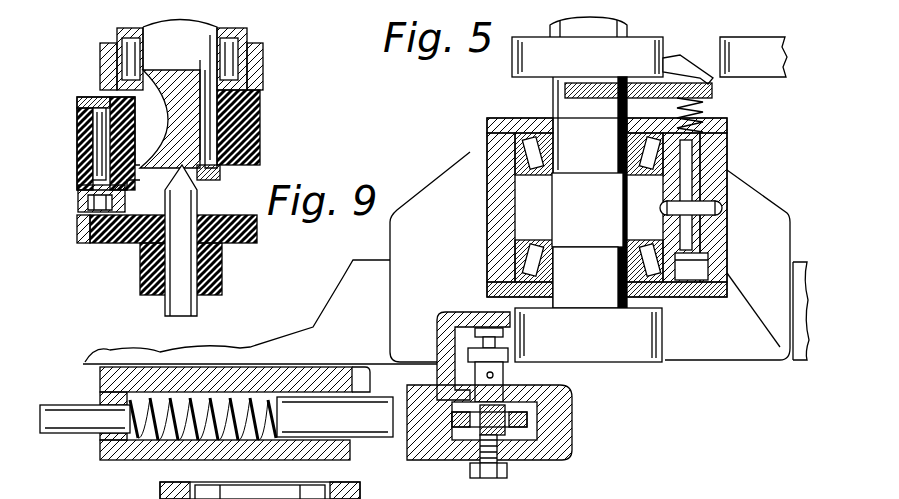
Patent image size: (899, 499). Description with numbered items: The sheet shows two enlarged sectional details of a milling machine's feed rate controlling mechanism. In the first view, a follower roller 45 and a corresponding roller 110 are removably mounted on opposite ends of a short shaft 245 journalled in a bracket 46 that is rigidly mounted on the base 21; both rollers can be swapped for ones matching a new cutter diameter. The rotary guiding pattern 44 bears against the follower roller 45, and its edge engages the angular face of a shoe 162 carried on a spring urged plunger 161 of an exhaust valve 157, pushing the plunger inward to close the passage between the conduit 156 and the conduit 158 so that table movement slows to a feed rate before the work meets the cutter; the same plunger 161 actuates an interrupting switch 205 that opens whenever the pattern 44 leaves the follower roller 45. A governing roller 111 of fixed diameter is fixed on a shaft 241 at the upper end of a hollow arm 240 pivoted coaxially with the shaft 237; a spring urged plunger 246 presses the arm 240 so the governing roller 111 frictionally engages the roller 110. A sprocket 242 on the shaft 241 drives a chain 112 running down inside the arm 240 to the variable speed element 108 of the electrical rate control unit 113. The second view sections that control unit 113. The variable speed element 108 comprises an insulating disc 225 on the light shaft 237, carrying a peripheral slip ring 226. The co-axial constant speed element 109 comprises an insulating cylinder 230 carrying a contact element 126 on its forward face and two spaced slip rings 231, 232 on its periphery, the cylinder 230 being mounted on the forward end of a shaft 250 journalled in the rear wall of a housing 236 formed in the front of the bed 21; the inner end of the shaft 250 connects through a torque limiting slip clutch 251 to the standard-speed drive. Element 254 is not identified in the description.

In FIG. 5, the bed or base 21 is at (198, 353).
In FIG. 5, the rotary guiding pattern 44 is at (752, 43).
In FIG. 5, the follower roller 45 is at (648, 40).
In FIG. 5, the bracket 46 is at (595, 197).
In FIG. 9, the variable speed element 108 is at (155, 242).
In FIG. 9, the constant speed element 109 is at (172, 105).
In FIG. 5, the corresponding roller 110 is at (663, 337).
In FIG. 5, the governing roller 111 is at (467, 352).
In FIG. 5, the chain 112 is at (463, 460).
In FIG. 9, the electrical rate control unit 113 is at (169, 51).
In FIG. 9, the contact element 126 is at (82, 212).
In FIG. 5, the conduit 156 is at (665, 207).
In FIG. 5, the exhaust valve 157 is at (733, 193).
In FIG. 5, the conduit 158 is at (723, 210).
In FIG. 5, the spring urged plunger 161 is at (725, 152).
In FIG. 5, the shoe 162 is at (707, 63).
In FIG. 5, the interrupting switch 205 is at (698, 272).
In FIG. 9, the plate or disc 225 is at (125, 243).
In FIG. 9, the slip ring 226 is at (82, 245).
In FIG. 9, the insulating cylinder 230 is at (255, 112).
In FIG. 9, the slip ring 231 is at (77, 104).
In FIG. 9, the slip ring 232 is at (77, 170).
In FIG. 9, the housing 236 is at (107, 72).
In FIG. 9, the shaft 237 is at (168, 313).
In FIG. 5, the hollow arm or bracket 240 is at (560, 438).
In FIG. 5, the shaft 241 is at (507, 378).
In FIG. 5, the sprocket 242 is at (540, 420).
In FIG. 5, the short shaft 245 is at (552, 215).
In FIG. 5, the spring urged plunger 246 is at (370, 438).
In FIG. 9, the shaft 250 is at (248, 29).
In FIG. 5, the shaft 250 is at (653, 497).
In FIG. 5, the torque limiting coupling or slip clutch 251 is at (463, 490).
In FIG. 9, the nut 254 is at (82, 206).